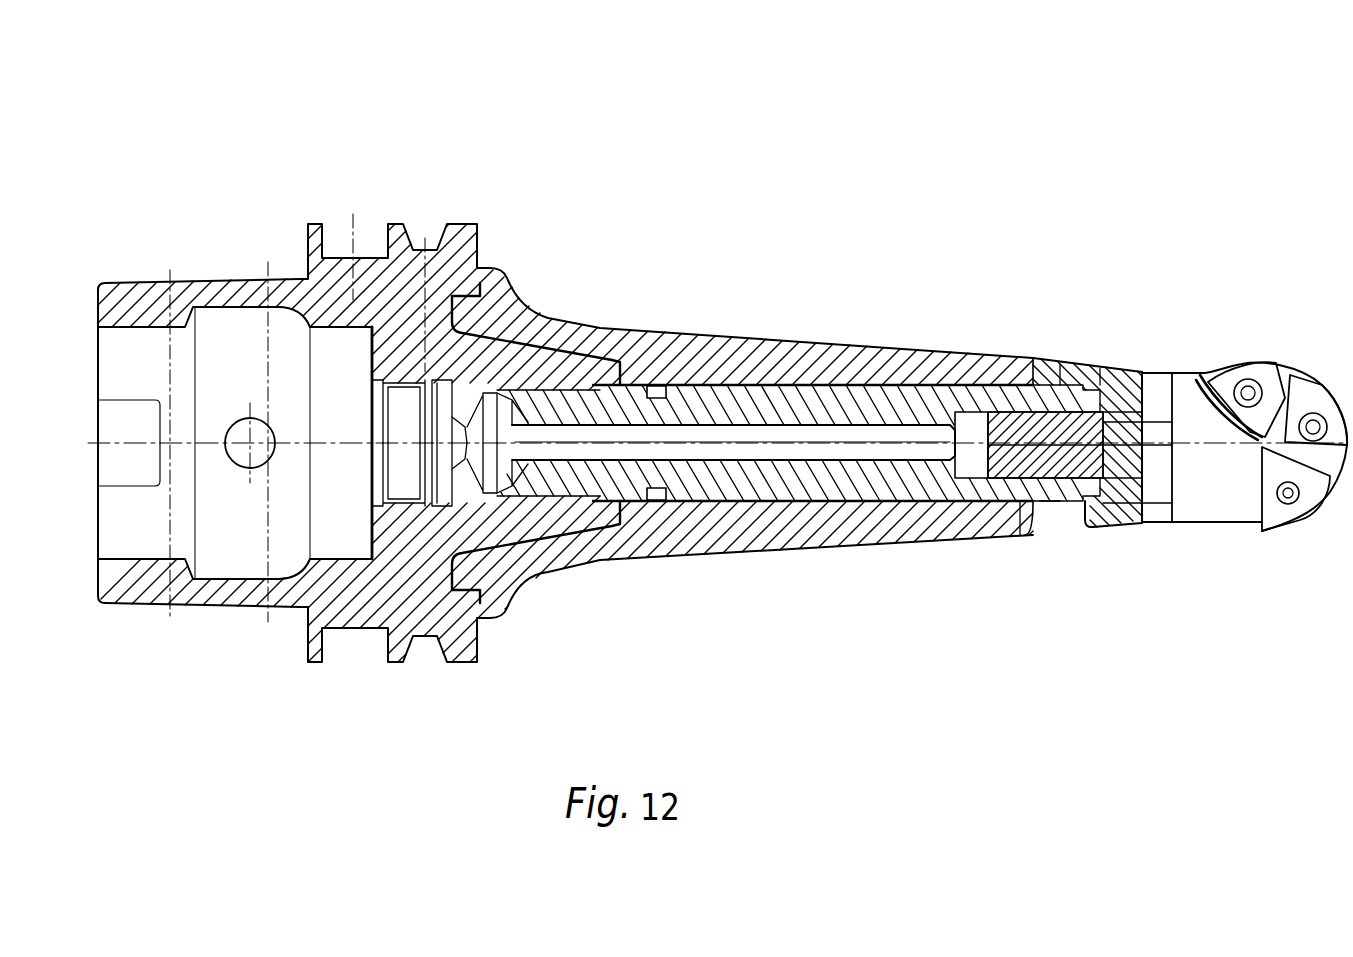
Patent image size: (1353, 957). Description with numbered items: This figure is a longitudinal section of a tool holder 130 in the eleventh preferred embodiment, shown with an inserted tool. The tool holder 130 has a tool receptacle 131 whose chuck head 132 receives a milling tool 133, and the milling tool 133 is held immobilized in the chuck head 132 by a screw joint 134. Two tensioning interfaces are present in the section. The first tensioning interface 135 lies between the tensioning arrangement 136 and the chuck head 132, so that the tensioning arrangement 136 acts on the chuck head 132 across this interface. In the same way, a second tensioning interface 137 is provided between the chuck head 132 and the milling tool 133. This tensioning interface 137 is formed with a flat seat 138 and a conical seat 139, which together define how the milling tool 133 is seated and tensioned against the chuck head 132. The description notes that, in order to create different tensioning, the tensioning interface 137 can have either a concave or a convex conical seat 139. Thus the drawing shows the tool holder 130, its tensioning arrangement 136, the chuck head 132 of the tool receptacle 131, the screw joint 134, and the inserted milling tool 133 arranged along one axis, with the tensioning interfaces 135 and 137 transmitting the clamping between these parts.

The tool holder 130 is at (742, 217).
The tool receptacle 131 is at (968, 428).
The chuck head 132 is at (1053, 510).
The milling tool 133 is at (1233, 272).
The screw joint 134 is at (1043, 407).
The tensioning interface 135 is at (1030, 517).
The tensioning arrangement 136 is at (867, 520).
The tensioning interface 137 is at (1088, 520).
The flat seat 138 is at (1077, 357).
The conical seat 139 is at (1110, 363).